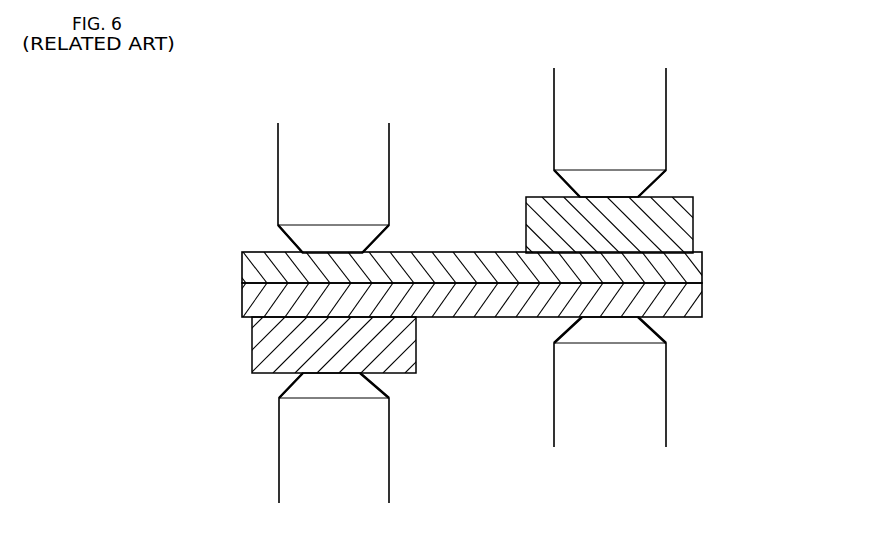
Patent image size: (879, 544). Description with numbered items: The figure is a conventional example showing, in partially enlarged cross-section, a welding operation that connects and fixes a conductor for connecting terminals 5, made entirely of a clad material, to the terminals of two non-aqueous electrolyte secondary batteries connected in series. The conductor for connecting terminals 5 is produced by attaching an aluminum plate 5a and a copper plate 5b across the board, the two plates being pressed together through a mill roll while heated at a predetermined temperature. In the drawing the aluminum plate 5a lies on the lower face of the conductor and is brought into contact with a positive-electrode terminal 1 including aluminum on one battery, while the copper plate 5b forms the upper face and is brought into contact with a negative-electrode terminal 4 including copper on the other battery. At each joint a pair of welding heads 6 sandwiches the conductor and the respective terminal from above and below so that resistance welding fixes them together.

The positive-electrode terminal 1 is at (286, 347).
The negative-electrode terminal 4 is at (648, 227).
The conductor for connecting terminals 5 is at (515, 284).
The aluminum plate 5a is at (690, 296).
The copper plate 5b is at (690, 266).
The welding head 6 is at (305, 177).